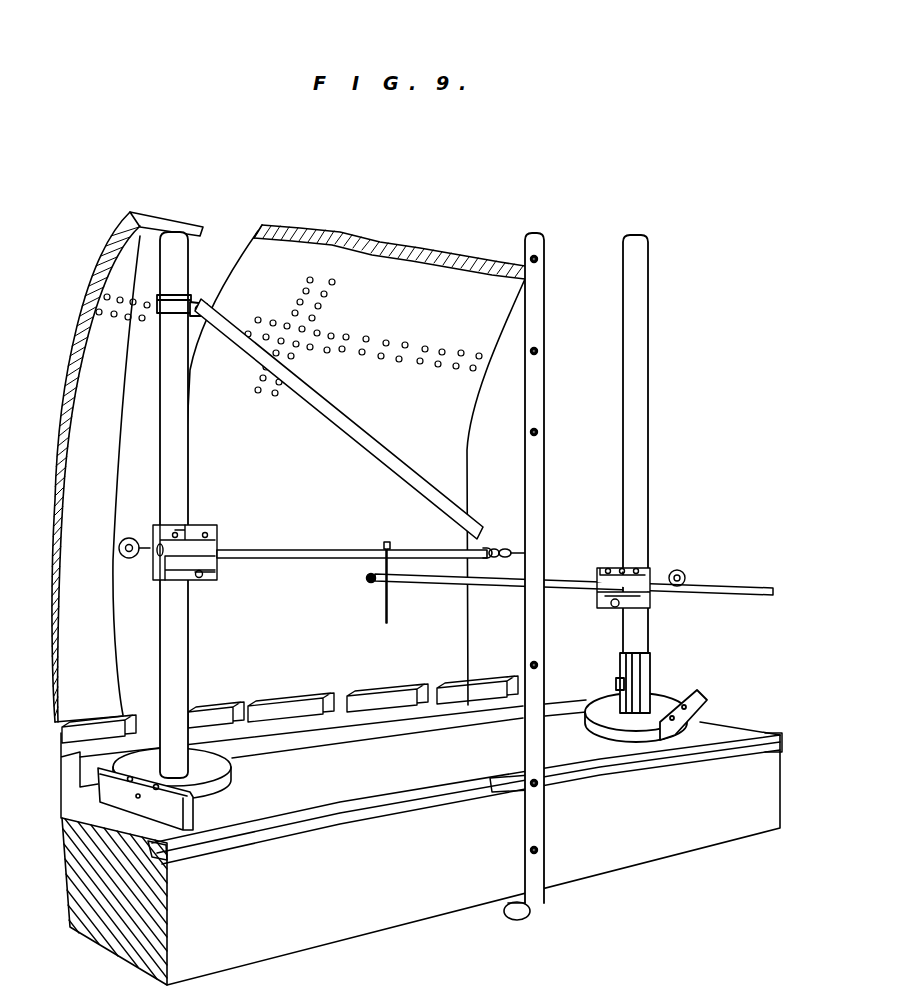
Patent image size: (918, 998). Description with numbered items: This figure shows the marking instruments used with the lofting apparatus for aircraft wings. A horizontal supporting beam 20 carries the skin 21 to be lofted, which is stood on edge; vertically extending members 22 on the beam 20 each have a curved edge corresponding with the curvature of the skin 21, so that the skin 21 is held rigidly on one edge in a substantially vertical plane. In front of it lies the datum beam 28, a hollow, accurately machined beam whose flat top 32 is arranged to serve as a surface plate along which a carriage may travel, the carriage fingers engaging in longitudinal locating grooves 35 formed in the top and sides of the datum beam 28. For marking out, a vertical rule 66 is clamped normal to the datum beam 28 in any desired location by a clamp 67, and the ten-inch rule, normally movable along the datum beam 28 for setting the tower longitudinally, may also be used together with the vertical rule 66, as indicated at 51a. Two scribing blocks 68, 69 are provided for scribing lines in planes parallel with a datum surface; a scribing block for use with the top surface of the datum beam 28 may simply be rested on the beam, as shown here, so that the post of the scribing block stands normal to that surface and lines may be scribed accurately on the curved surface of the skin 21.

The horizontal supporting beam 20 is at (441, 708).
The skin 21 is at (401, 272).
The vertically extending members 22 is at (200, 710).
The datum beam 28 is at (645, 848).
The flat top 32 is at (323, 803).
The longitudinal locating grooves 35 is at (160, 853).
The rule 51a is at (536, 545).
The vertical rule 66 is at (545, 335).
The clamp 67 is at (521, 918).
The scribing block 68 is at (176, 624).
The scribing block 69 is at (638, 502).